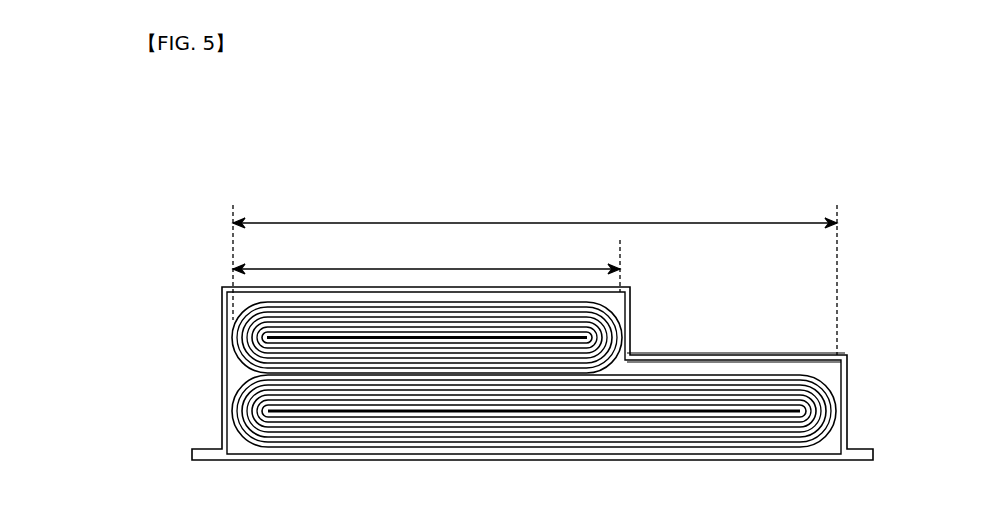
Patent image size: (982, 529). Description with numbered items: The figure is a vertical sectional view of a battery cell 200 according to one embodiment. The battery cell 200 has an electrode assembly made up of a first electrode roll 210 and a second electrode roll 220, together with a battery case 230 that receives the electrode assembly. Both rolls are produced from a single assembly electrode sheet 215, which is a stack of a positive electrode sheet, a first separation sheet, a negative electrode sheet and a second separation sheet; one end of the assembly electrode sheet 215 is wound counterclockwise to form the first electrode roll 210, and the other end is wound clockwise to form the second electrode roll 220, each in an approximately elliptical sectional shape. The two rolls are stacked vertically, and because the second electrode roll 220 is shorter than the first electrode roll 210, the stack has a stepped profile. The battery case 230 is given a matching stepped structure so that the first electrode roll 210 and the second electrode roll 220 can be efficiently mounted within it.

The battery cell 200 is at (228, 156).
The first electrode roll 210 is at (831, 398).
The assembly electrode sheet 215 is at (682, 364).
The second electrode roll 220 is at (607, 322).
The battery case 230 is at (222, 378).